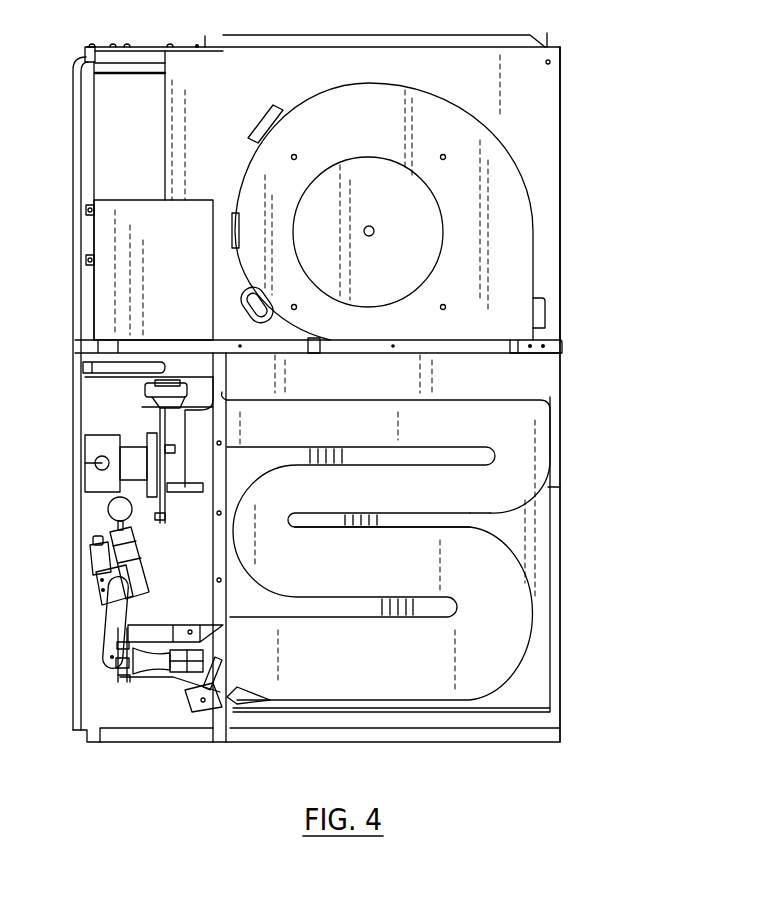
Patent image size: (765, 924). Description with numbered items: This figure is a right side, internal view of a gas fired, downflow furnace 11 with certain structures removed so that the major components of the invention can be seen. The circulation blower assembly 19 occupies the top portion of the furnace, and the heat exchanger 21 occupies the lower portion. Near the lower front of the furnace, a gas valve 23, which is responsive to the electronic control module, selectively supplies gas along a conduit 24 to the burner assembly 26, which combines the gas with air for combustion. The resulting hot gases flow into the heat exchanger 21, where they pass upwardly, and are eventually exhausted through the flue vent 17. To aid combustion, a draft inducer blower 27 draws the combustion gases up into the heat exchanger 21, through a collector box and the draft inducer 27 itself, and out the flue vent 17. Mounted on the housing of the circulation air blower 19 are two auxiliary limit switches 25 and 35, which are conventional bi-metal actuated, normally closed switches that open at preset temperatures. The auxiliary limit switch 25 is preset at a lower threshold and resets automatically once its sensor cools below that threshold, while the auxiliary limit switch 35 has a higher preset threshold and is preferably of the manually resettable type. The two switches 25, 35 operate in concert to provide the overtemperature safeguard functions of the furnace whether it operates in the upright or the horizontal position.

The furnace cabinet 11 is at (562, 165).
The flue vent 17 is at (103, 47).
The circulation blower assembly 19 is at (528, 107).
The heat exchanger 21 is at (528, 624).
The gas valve 23 is at (100, 586).
The conduit 24 is at (107, 630).
The auxiliary limit switch 25 is at (545, 320).
The burner assembly 26 is at (150, 678).
The draft inducer blower 27 is at (170, 430).
The auxiliary limit switch 35 is at (280, 100).